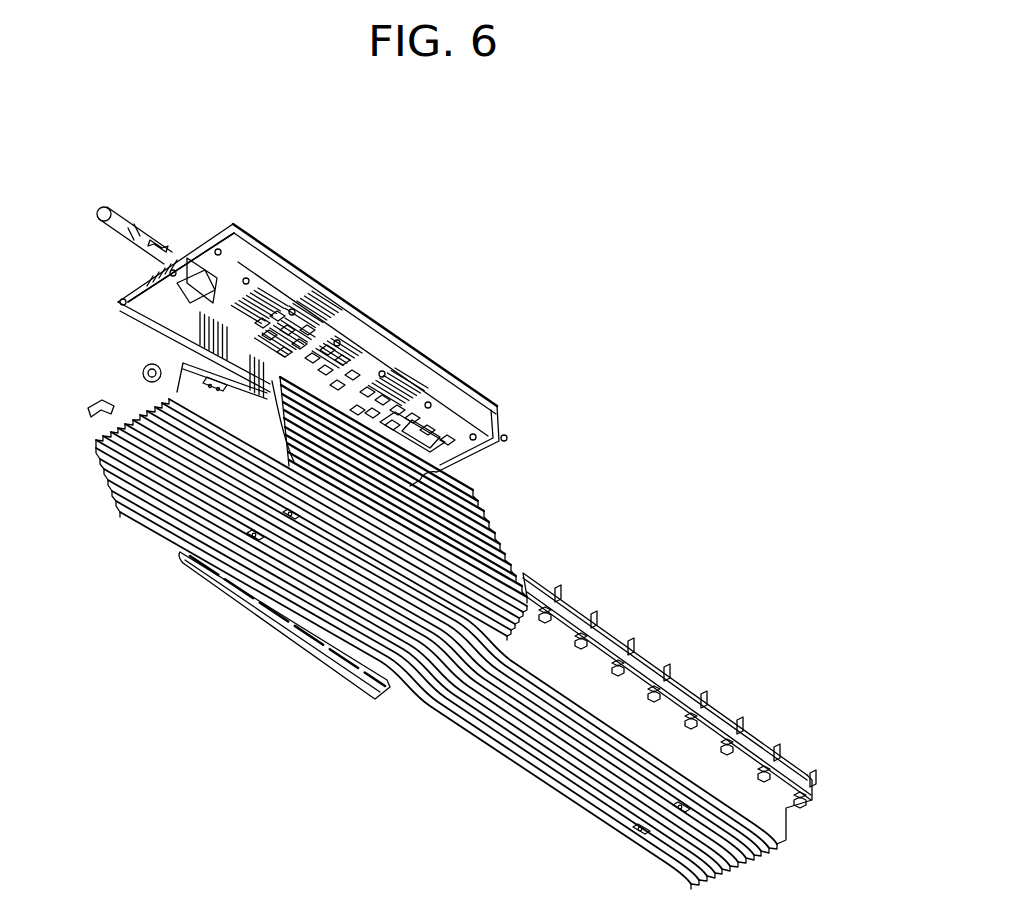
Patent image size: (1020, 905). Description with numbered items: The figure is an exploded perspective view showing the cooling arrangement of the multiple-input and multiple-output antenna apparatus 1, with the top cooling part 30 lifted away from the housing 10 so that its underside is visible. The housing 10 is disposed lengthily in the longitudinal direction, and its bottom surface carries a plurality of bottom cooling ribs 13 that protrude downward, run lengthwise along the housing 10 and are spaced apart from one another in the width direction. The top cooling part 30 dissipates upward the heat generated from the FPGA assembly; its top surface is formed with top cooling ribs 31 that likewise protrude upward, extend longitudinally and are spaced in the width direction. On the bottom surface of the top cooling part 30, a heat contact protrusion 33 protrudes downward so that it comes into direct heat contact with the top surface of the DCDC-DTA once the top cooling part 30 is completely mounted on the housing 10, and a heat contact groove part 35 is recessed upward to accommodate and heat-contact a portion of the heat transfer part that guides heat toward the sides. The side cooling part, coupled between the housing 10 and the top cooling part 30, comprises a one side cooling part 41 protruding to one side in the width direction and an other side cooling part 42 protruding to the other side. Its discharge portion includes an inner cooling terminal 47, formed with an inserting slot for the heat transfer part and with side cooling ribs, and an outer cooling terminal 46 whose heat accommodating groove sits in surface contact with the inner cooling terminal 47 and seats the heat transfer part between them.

The multiple-input and multiple-output antenna apparatus 1 is at (108, 268).
The housing 10 is at (420, 722).
The bottom cooling ribs 13 is at (505, 768).
The top cooling part 30 is at (330, 273).
The top cooling ribs 31 is at (215, 242).
The heat contact protrusion 33 is at (345, 380).
The heat contact groove part 35 is at (260, 295).
The one side cooling part 41 is at (197, 592).
The other side cooling part 42 is at (500, 497).
The outer cooling terminal 46 is at (248, 602).
The inner cooling terminal 47 is at (260, 605).